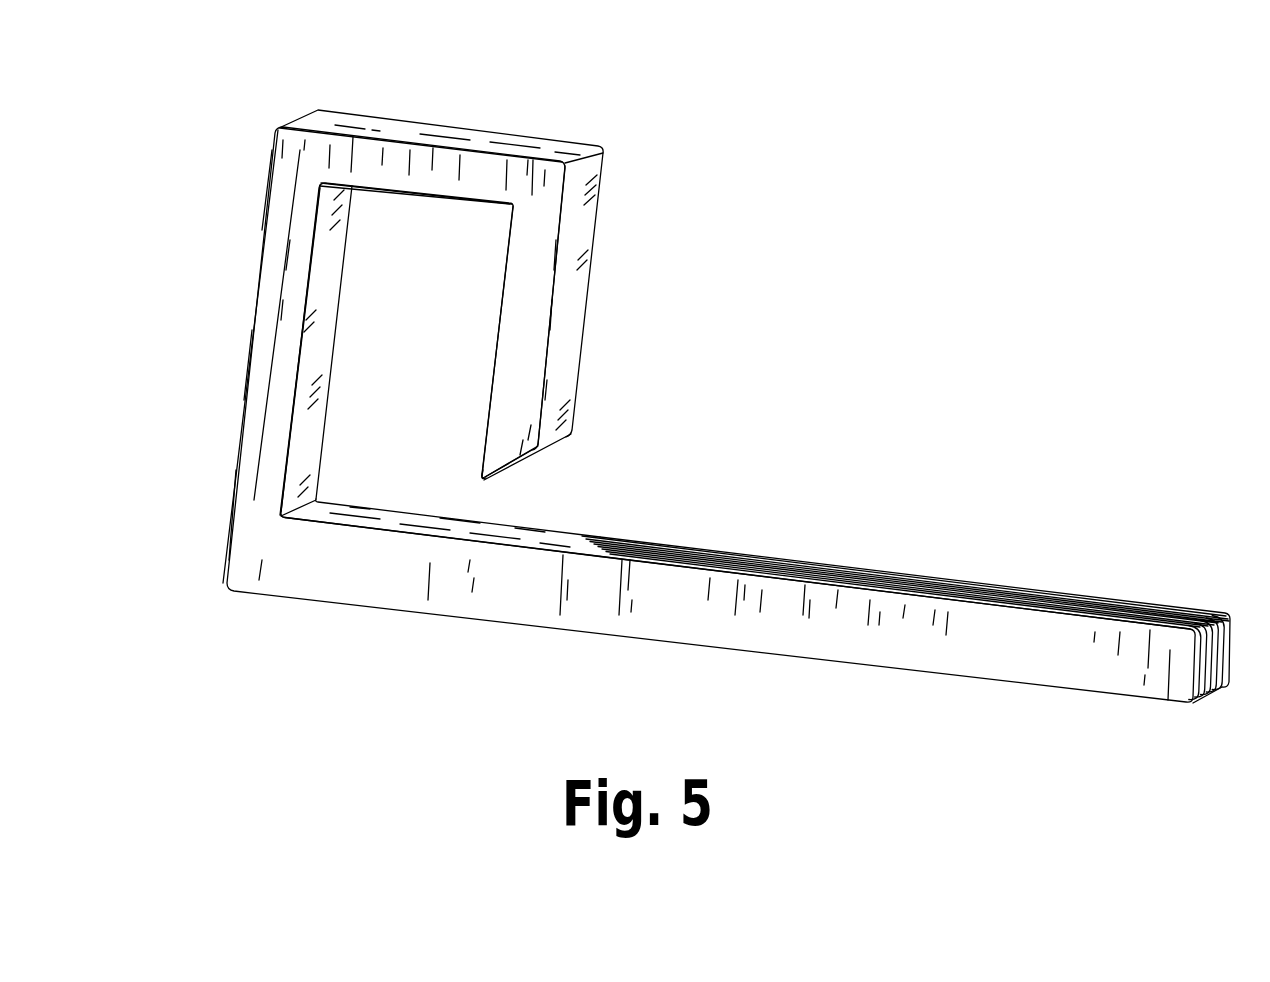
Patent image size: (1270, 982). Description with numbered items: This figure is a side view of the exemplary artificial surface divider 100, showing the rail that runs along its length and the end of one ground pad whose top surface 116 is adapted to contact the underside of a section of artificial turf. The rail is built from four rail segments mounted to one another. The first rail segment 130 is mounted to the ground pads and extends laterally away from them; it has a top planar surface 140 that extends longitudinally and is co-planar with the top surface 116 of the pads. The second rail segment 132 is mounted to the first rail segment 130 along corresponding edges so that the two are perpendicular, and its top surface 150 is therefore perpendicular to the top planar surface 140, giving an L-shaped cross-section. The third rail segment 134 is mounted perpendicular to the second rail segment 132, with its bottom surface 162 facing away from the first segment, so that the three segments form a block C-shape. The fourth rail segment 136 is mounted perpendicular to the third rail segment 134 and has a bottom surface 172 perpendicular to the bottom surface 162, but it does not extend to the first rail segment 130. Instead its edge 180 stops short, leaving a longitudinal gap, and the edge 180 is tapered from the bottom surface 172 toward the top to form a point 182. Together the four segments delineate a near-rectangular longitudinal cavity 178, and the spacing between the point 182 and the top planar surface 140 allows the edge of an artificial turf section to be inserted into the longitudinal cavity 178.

The artificial surface divider 100 is at (688, 384).
The top surface 116 is at (775, 560).
The first rail segment 130 is at (407, 590).
The second rail segment 132 is at (257, 392).
The third rail segment 134 is at (362, 150).
The fourth rail segment 136 is at (520, 386).
The top planar surface 140 is at (367, 513).
The top surface 150 is at (320, 368).
The bottom surface 162 is at (457, 131).
The bottom surface 172 is at (567, 308).
The longitudinal cavity 178 is at (366, 259).
The edge 180 is at (538, 458).
The point 182 is at (482, 480).